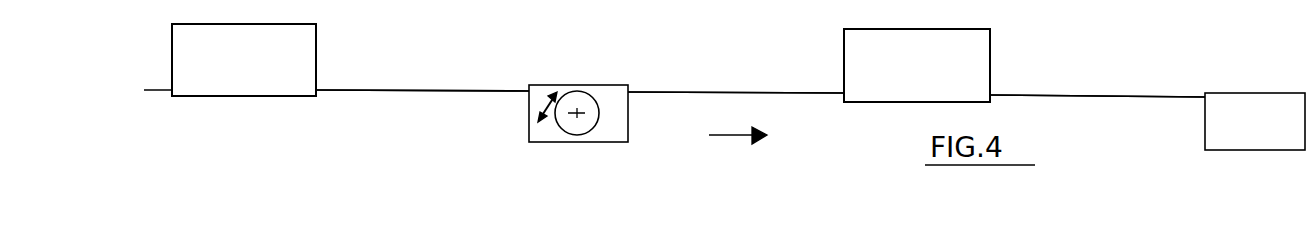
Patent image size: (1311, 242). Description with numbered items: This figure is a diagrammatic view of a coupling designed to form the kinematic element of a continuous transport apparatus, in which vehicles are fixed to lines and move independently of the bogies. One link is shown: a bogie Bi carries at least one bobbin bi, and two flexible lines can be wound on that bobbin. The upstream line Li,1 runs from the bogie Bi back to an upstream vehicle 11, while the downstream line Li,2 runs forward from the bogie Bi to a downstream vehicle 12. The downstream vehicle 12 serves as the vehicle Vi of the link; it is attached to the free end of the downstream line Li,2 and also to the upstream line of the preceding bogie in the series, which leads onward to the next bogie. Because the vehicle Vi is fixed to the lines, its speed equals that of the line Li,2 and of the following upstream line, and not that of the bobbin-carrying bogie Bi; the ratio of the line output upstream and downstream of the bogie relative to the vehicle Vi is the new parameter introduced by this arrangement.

The upstream vehicle 11 is at (283, 65).
The downstream vehicle 12 is at (955, 62).
The bogie Bi is at (538, 136).
The bobbin bi is at (590, 112).
The vehicle Vi is at (990, 52).
The upstream line Li,1 is at (408, 90).
The downstream line Li,2 is at (693, 93).